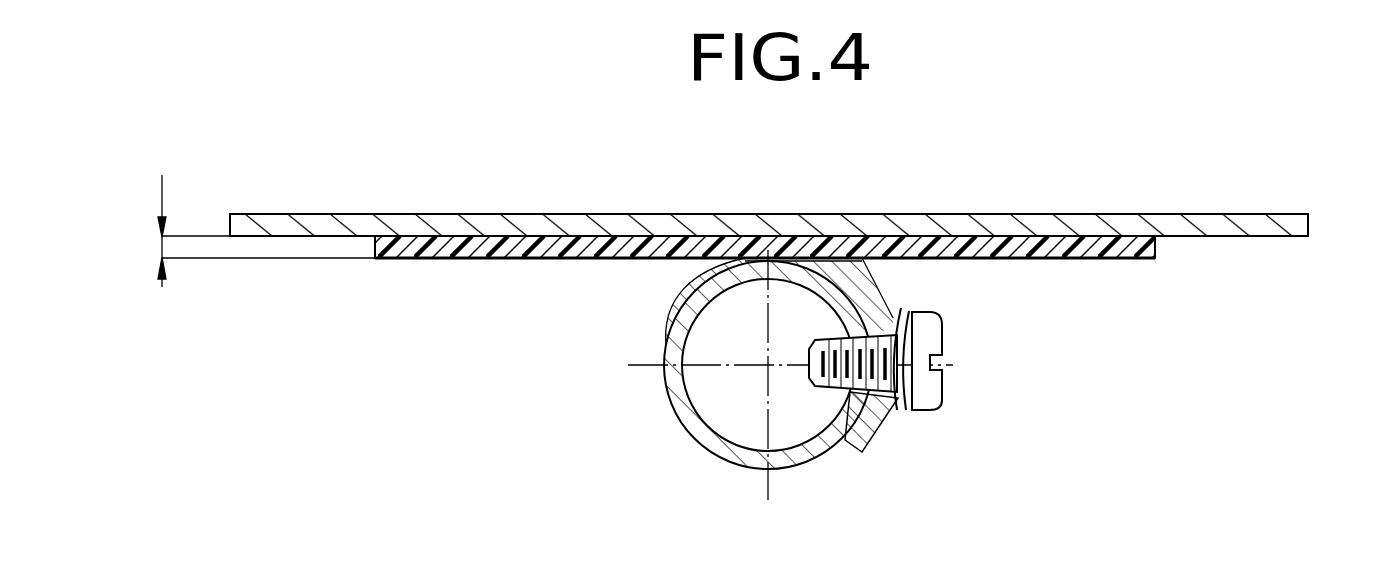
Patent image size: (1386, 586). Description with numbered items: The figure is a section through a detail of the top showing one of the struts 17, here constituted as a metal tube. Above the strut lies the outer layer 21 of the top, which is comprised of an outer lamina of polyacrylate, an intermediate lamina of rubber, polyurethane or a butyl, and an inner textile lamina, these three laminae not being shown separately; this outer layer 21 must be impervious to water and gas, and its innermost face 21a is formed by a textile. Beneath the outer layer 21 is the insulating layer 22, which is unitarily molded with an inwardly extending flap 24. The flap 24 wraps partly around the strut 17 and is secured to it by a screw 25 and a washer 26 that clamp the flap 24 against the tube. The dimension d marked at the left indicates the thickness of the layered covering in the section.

The outer layer 21 is at (1247, 222).
The innermost face 21a is at (1267, 234).
The insulating layer 22 is at (1132, 258).
The strut 17 is at (668, 331).
The flap 24 is at (883, 433).
The washer 26 is at (903, 318).
The screw 25 is at (932, 404).
The thickness distance d is at (152, 248).